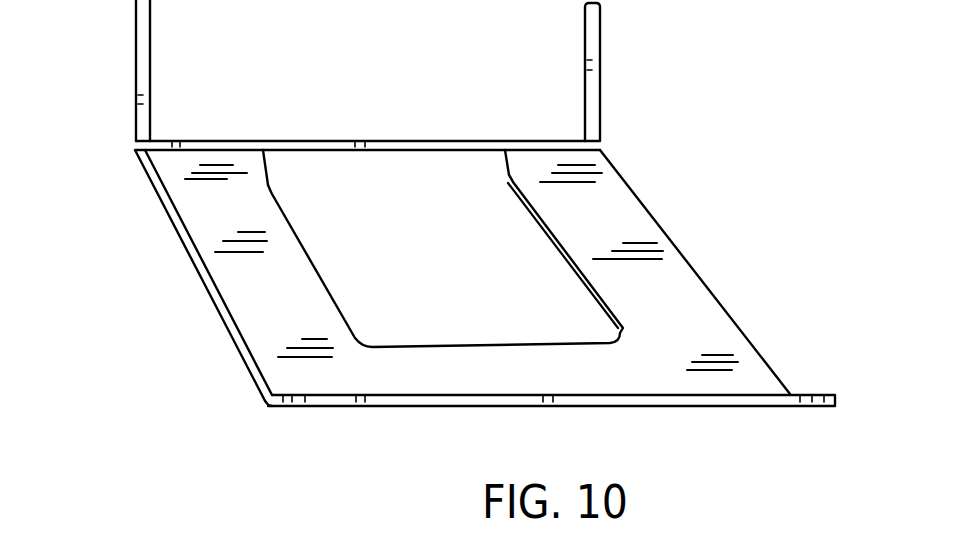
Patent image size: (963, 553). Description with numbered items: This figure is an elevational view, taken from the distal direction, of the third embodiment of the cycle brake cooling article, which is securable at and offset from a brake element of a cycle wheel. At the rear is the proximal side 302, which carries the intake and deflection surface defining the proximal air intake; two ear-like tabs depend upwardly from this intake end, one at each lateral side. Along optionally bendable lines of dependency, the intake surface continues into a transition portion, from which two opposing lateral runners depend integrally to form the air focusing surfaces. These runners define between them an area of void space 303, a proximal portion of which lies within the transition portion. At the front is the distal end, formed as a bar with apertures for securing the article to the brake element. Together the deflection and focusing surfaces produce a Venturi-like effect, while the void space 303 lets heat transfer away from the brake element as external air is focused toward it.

The proximal side 302 is at (448, 75).
The void space 303 is at (460, 283).